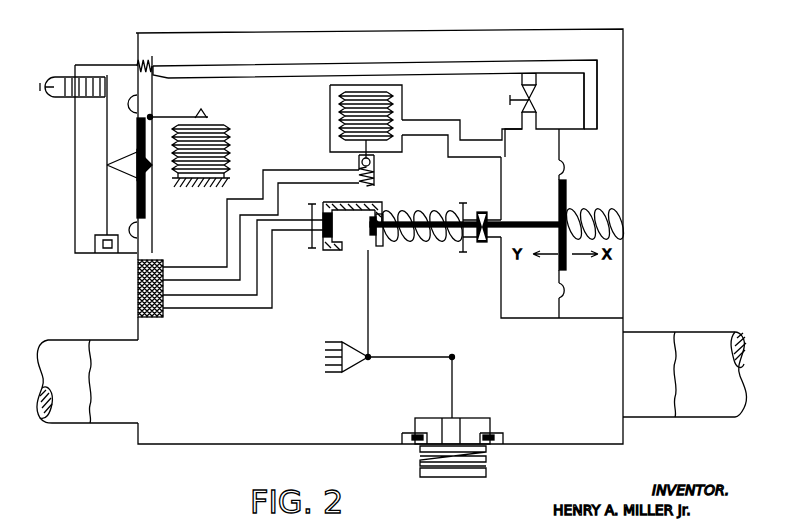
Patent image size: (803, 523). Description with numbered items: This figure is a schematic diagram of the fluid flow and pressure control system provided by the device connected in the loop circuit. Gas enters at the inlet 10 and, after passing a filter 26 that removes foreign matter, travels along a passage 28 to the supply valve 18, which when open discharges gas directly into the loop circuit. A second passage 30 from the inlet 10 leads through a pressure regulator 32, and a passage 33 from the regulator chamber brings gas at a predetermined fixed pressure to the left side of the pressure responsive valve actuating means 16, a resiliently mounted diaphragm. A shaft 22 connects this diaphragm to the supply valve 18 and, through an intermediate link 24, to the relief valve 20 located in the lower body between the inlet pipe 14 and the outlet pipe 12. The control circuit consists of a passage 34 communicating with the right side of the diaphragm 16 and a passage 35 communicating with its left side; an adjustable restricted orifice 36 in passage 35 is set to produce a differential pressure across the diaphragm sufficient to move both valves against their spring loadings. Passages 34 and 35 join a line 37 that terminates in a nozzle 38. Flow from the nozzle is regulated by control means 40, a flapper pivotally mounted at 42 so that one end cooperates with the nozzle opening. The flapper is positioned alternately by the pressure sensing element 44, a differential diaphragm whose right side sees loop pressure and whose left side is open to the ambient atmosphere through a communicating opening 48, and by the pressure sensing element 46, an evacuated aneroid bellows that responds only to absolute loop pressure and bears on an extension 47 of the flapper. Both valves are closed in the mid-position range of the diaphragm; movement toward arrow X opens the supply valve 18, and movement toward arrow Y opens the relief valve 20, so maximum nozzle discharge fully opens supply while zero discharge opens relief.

The inlet 10 is at (137, 287).
The outlet pipe 12 is at (741, 357).
The inlet pipe 14 is at (44, 402).
The valve actuating means 16 is at (567, 196).
The supply valve 18 is at (318, 245).
The relief valve 20 is at (468, 420).
The shaft 22 is at (443, 243).
The intermediate link 24 is at (371, 328).
The filter 26 is at (161, 262).
The passage 28 is at (220, 298).
The passage 30 is at (203, 273).
The pressure regulator 32 is at (392, 101).
The passage 33 is at (453, 125).
The passage 34 is at (590, 97).
The passage 35 is at (528, 119).
The adjustable restricted orifice 36 is at (537, 100).
The line 37 is at (433, 70).
The nozzle 38 is at (166, 70).
The control means 40 is at (153, 96).
The pivot 42 is at (178, 110).
The pressure sensing element 44 is at (137, 142).
The pressure sensing element 46 is at (231, 150).
The extension 47 is at (185, 117).
The communicating opening 48 is at (77, 165).